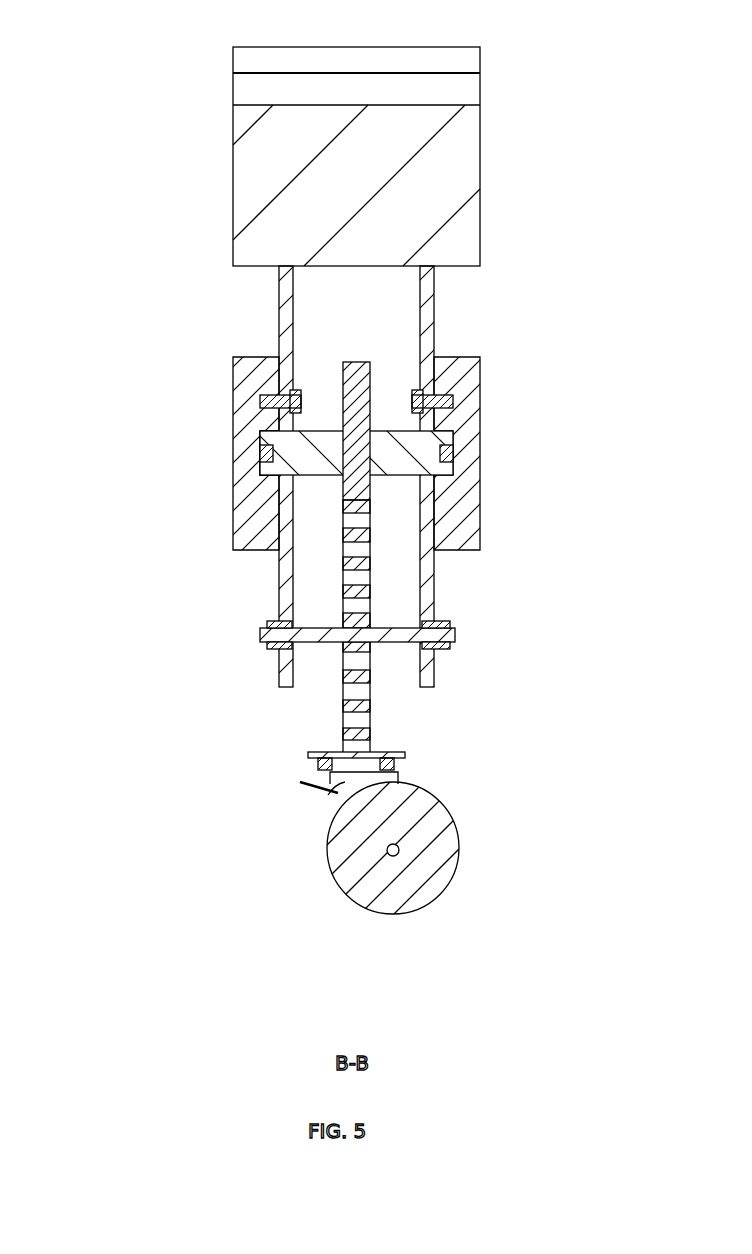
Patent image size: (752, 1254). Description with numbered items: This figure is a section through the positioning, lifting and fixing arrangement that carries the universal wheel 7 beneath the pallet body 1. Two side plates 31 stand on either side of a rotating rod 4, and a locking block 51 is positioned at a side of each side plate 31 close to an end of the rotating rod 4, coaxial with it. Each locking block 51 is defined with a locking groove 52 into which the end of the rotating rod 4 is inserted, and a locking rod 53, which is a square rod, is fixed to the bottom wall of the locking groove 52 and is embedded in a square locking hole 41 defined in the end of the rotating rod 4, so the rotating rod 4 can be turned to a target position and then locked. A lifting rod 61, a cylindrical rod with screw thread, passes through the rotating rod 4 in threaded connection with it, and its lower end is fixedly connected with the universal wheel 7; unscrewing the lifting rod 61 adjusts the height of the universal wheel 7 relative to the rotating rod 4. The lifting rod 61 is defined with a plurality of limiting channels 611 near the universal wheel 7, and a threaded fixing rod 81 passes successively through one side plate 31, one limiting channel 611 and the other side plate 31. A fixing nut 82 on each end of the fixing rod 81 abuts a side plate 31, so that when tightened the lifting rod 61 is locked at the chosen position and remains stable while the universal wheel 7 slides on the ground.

The pallet body 1 is at (253, 167).
The side plates 31 is at (283, 330).
The locking block 51 is at (243, 385).
The locking groove 52 is at (253, 427).
The locking rod 53 is at (268, 452).
The rotating rod 4 is at (445, 415).
The locking hole 41 is at (457, 445).
The fixing rod 81 is at (262, 635).
The fixing nut 82 is at (448, 644).
The lifting rod 61 is at (336, 565).
The limiting channels 611 is at (371, 672).
The universal wheel 7 is at (367, 840).